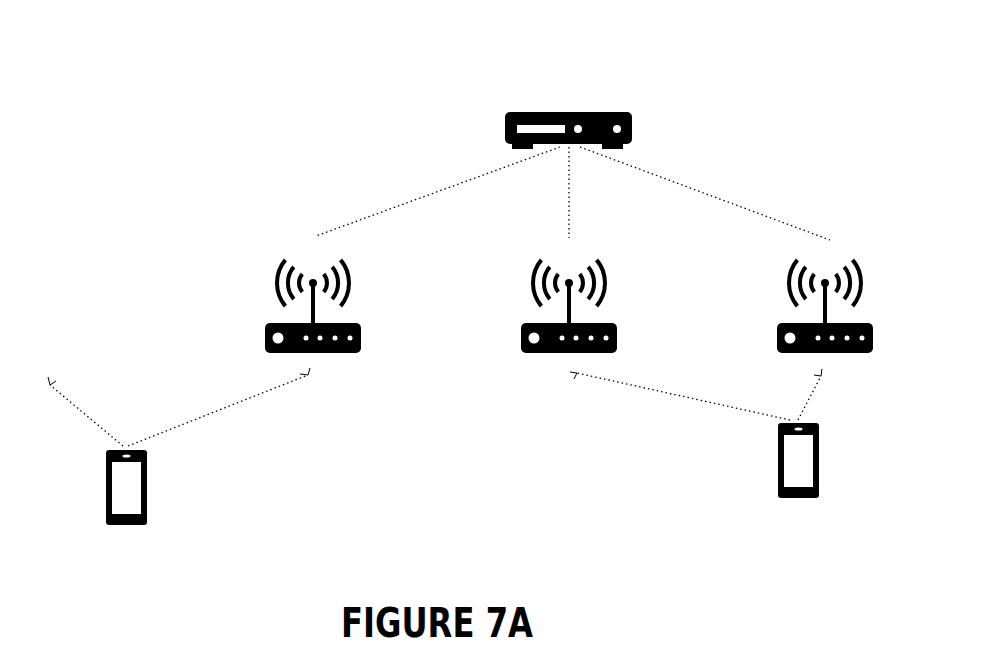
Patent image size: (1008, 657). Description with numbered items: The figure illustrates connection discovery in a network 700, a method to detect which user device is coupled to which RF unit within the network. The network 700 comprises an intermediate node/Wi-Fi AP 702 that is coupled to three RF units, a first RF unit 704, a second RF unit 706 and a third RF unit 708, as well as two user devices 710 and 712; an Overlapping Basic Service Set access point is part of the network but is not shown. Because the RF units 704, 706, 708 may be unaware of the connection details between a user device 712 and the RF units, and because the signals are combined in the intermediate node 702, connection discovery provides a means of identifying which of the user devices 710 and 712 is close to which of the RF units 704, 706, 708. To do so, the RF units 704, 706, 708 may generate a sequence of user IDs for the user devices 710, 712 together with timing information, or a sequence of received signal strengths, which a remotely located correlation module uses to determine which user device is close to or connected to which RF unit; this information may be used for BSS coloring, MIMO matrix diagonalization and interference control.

The network 700 is at (476, 27).
The intermediate node/Wi-Fi AP 702 is at (563, 110).
The RF unit 704 is at (355, 355).
The RF unit 706 is at (530, 356).
The RF unit 708 is at (790, 357).
The user device 710 is at (152, 495).
The user device 712 is at (774, 455).